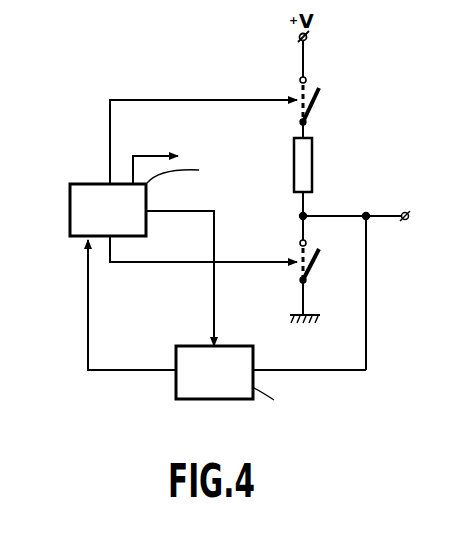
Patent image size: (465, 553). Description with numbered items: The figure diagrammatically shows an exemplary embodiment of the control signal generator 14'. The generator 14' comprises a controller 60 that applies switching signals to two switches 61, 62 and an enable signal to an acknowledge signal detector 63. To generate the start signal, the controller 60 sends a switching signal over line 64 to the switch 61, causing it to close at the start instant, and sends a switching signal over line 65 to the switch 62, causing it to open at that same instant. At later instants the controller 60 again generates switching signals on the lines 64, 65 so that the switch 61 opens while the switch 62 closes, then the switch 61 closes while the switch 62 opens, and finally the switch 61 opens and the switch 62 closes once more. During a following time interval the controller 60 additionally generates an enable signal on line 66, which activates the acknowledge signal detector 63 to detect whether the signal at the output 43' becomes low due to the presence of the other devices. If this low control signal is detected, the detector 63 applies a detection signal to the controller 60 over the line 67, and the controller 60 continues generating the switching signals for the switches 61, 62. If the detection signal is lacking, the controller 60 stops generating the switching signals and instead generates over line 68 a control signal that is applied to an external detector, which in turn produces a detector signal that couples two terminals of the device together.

The control signal generator 14' is at (142, 66).
The output 43' is at (408, 233).
The controller 60 is at (82, 183).
The switch 61 is at (317, 104).
The switch 62 is at (317, 269).
The acknowledge signal detector 63 is at (189, 345).
The line 64 is at (211, 102).
The line 65 is at (171, 263).
The line 66 is at (193, 196).
The line 67 is at (134, 371).
The line 68 is at (150, 155).